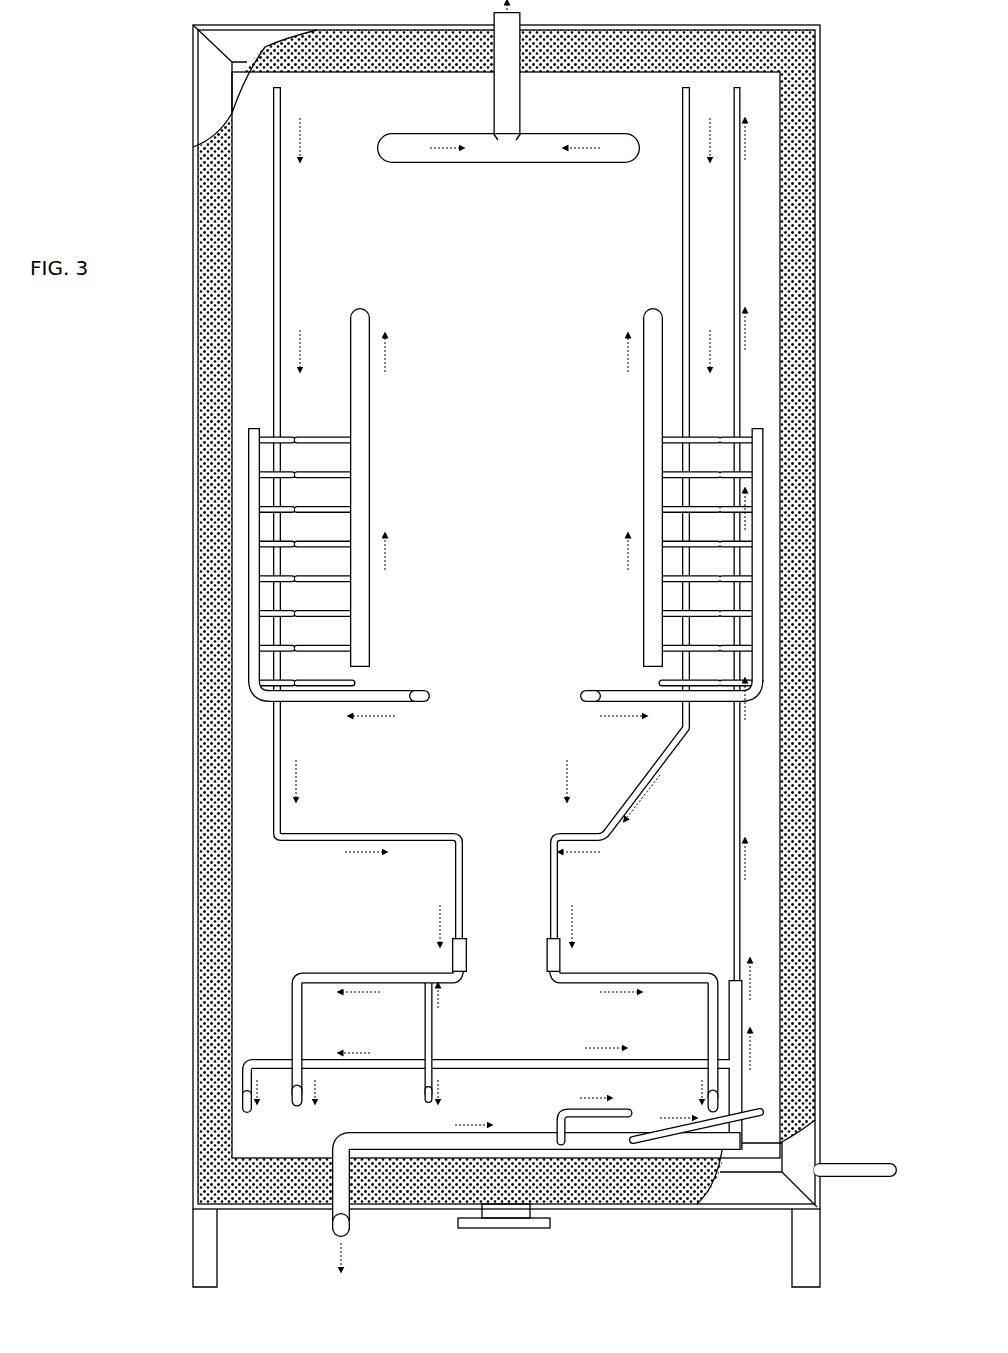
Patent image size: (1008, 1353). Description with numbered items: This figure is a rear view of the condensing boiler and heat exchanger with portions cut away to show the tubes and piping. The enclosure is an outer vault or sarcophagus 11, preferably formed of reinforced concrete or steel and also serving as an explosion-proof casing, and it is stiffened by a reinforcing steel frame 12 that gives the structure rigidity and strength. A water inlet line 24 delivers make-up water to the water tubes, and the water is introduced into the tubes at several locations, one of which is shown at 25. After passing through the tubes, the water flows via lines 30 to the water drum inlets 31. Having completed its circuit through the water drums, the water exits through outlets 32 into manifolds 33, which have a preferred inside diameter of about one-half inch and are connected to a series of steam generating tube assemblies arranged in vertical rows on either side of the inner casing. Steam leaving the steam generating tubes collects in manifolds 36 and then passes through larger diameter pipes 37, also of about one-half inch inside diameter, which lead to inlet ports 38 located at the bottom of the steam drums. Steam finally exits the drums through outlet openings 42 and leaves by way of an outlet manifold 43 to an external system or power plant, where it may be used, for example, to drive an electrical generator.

The outer vault 11 is at (800, 710).
The reinforcing steel frame 12 is at (212, 80).
The water inlet line 24 is at (330, 1218).
The water introduction location 25 is at (744, 98).
The lines 30 is at (282, 99).
The water drum inlets 31 is at (716, 1108).
The outlets 32 is at (431, 700).
The manifolds 33 is at (255, 540).
The manifolds 36 is at (330, 438).
The larger diameter pipes 37 is at (362, 495).
The inlet ports 38 is at (362, 306).
The outlet openings 42 is at (393, 152).
The outlet manifold 43 is at (508, 152).